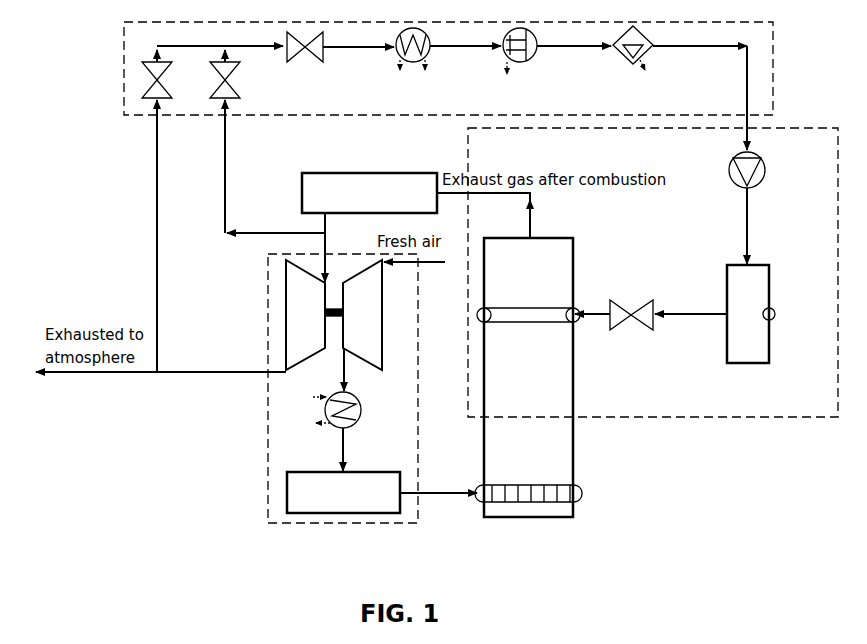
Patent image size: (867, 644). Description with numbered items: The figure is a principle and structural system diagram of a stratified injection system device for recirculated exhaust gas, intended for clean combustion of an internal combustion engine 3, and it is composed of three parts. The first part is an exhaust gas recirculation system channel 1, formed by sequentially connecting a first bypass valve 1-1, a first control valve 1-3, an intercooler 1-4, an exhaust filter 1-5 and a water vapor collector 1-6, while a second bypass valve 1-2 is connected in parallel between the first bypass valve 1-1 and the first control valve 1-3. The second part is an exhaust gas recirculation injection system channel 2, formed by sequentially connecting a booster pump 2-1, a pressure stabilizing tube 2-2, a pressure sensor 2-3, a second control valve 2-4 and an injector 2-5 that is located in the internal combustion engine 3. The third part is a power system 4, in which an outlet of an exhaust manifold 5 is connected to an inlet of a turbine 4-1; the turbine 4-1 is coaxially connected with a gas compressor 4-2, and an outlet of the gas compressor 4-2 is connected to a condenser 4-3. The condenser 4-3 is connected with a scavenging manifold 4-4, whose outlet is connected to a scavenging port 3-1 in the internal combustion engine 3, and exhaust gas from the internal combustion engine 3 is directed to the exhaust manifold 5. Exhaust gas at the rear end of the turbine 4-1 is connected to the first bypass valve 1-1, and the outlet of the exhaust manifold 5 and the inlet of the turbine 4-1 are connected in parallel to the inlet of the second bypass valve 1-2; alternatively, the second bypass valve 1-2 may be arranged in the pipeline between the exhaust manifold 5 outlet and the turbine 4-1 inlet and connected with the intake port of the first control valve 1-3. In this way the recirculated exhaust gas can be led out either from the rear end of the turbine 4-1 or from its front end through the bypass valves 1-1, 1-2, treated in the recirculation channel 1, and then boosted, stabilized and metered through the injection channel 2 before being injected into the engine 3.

The exhaust gas recirculation system channel 1 is at (124, 62).
The first bypass valve 1-1 is at (152, 98).
The second bypass valve 1-2 is at (234, 98).
The first control valve 1-3 is at (323, 60).
The intercooler 1-4 is at (428, 57).
The exhaust filter 1-5 is at (538, 57).
The water vapor collector 1-6 is at (648, 60).
The exhaust gas recirculation injection system channel 2 is at (673, 417).
The booster pump 2-1 is at (730, 168).
The pressure stabilizing tube 2-2 is at (830, 398).
The pressure sensor 2-3 is at (832, 354).
The second control valve 2-4 is at (645, 328).
The injector 2-5 is at (548, 358).
The internal combustion engine 3 is at (525, 517).
The scavenging port 3-1 is at (583, 500).
The power system 4 is at (345, 523).
The turbine 4-1 is at (288, 372).
The gas compressor 4-2 is at (440, 405).
The condenser 4-3 is at (410, 450).
The scavenging manifold 4-4 is at (343, 492).
The exhaust manifold 5 is at (369, 193).